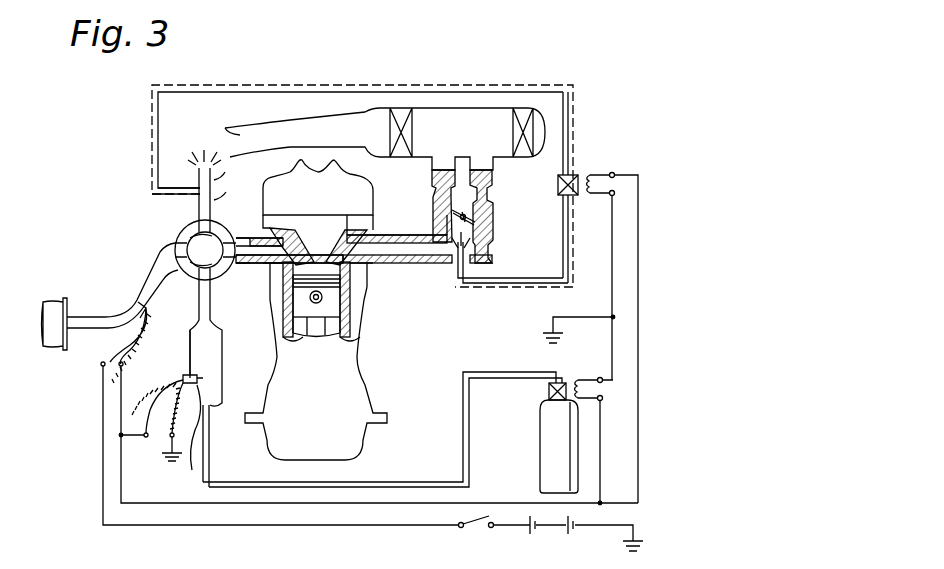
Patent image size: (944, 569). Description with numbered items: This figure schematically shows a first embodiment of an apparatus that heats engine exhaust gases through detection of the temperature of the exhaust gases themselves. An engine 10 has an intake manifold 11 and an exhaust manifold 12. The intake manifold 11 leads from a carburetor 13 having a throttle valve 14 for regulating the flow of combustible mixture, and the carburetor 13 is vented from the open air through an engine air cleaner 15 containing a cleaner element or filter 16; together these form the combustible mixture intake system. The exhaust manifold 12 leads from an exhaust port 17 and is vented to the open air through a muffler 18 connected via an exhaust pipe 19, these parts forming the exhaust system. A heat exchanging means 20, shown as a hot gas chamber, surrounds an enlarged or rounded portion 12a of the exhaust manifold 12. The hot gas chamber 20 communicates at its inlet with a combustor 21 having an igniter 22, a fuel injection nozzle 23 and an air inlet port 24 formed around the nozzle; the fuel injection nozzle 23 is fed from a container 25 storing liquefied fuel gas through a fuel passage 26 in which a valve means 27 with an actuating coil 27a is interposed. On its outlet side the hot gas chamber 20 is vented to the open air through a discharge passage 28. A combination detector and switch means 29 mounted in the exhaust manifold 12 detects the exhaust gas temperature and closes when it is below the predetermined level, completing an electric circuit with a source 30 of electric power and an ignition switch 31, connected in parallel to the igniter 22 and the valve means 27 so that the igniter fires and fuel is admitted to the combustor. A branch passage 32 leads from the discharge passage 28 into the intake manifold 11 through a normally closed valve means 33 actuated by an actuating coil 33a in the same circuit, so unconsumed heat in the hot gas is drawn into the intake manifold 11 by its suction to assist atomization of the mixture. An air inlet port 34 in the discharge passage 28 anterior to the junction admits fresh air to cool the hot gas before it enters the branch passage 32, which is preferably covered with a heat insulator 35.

The engine 10 is at (323, 201).
The intake manifold 11 is at (396, 240).
The exhaust manifold 12 is at (252, 265).
The enlarged or rounded portion of the exhaust manifold 12a is at (190, 278).
The carburetor 13 is at (495, 215).
The throttle valve 14 is at (493, 208).
The engine air cleaner 15 is at (468, 118).
The cleaner element or filter 16 is at (445, 95).
The exhaust port 17 is at (276, 300).
The muffler 18 is at (50, 350).
The exhaust pipe 19 is at (147, 272).
The heat exchanging means 20 is at (176, 244).
The combustor 21 is at (190, 365).
The igniter 22 is at (192, 472).
The fuel injection nozzle 23 is at (220, 402).
The air inlet port 24 is at (210, 410).
The container 25 is at (540, 448).
The fuel passage 26 is at (420, 481).
The valve means 27 is at (548, 392).
The actuating coil 27a is at (590, 378).
The discharge passage 28 is at (214, 185).
The combination detector and switch means 29 is at (138, 302).
The source of electric power 30 is at (548, 530).
The ignition switch 31 is at (465, 530).
The branch passage 32 is at (287, 88).
The valve means 33 is at (580, 176).
The actuating coil 33a is at (590, 200).
The air inlet port 34 is at (158, 205).
The heat insulator 35 is at (398, 108).